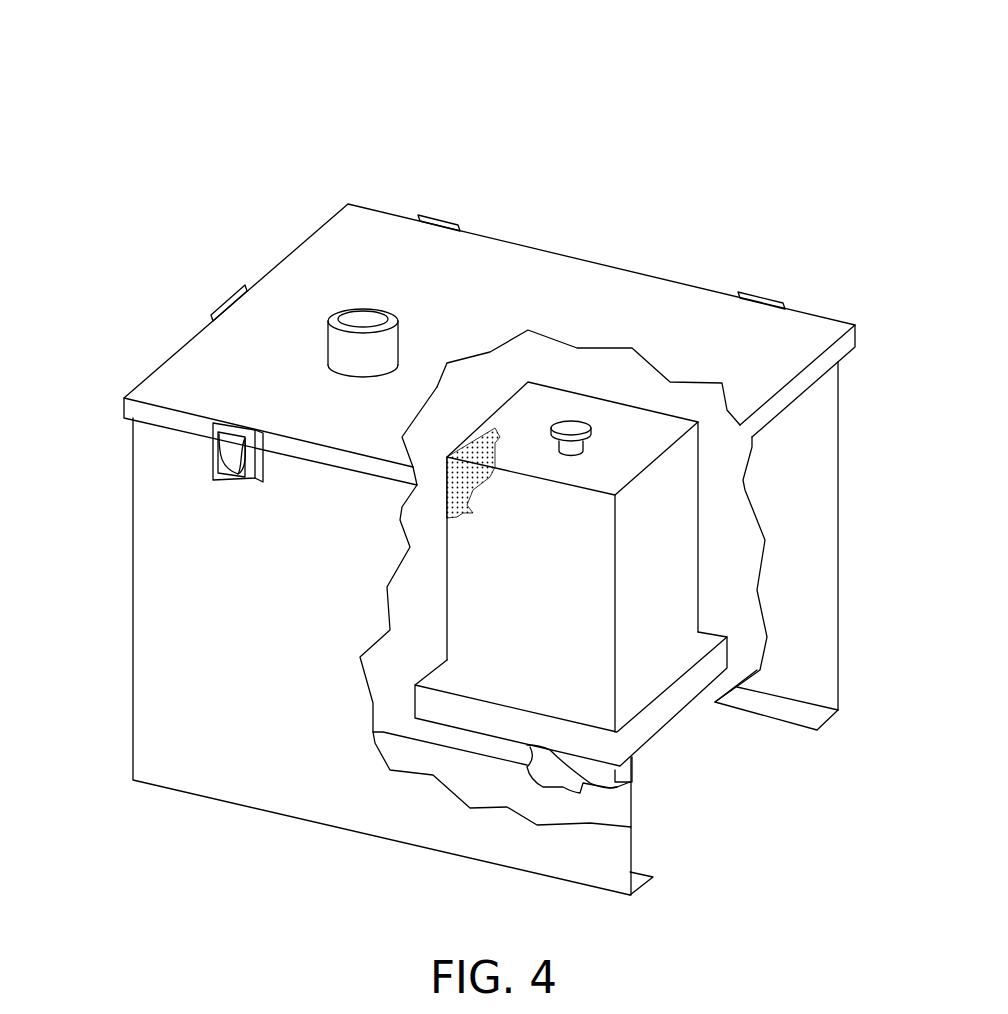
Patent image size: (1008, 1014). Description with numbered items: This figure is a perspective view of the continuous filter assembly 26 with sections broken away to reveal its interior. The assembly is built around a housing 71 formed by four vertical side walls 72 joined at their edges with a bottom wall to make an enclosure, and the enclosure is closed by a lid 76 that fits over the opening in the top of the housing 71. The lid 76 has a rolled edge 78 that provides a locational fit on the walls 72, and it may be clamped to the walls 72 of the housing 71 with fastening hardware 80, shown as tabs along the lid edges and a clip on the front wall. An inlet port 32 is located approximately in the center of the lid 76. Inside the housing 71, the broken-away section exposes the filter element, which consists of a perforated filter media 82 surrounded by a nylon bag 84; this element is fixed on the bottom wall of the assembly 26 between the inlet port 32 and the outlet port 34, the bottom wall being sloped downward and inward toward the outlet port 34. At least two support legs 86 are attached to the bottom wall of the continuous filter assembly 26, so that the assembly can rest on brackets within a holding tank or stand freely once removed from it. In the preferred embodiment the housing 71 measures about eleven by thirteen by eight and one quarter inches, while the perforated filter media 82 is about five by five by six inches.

The continuous filter assembly 26 is at (540, 145).
The inlet port 32 is at (357, 305).
The outlet port 34 is at (583, 790).
The housing 71 is at (838, 447).
The side walls 72 is at (143, 658).
The lid 76 is at (190, 355).
The rolled edge 78 is at (348, 467).
The fastening hardware 80 is at (236, 292).
The perforated filter media 82 is at (463, 517).
The nylon bag 84 is at (640, 402).
The support legs 86 is at (458, 845).